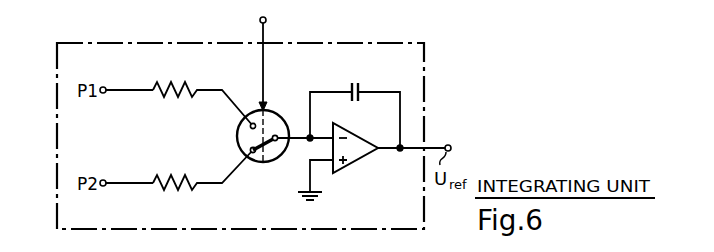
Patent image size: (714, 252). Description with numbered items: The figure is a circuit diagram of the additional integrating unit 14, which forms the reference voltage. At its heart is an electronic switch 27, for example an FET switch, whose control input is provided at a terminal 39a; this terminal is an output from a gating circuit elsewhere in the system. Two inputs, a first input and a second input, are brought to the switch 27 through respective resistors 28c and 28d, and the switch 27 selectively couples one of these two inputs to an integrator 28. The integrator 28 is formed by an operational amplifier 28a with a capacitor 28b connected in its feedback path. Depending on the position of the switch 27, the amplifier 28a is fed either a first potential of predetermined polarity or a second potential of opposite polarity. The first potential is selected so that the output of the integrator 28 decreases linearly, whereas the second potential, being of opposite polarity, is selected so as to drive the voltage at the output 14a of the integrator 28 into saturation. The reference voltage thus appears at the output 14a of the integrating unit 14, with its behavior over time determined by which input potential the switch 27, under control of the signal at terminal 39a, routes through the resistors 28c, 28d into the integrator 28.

The integrating unit 14 is at (108, 43).
The output of the integrator 14a is at (434, 151).
The electronic switch 27 is at (277, 162).
The integrator 28 is at (356, 130).
The operational amplifier 28a is at (362, 150).
The capacitor 28b is at (357, 80).
The resistor 28c is at (155, 82).
The resistor 28d is at (159, 190).
The terminal 39a is at (266, 20).